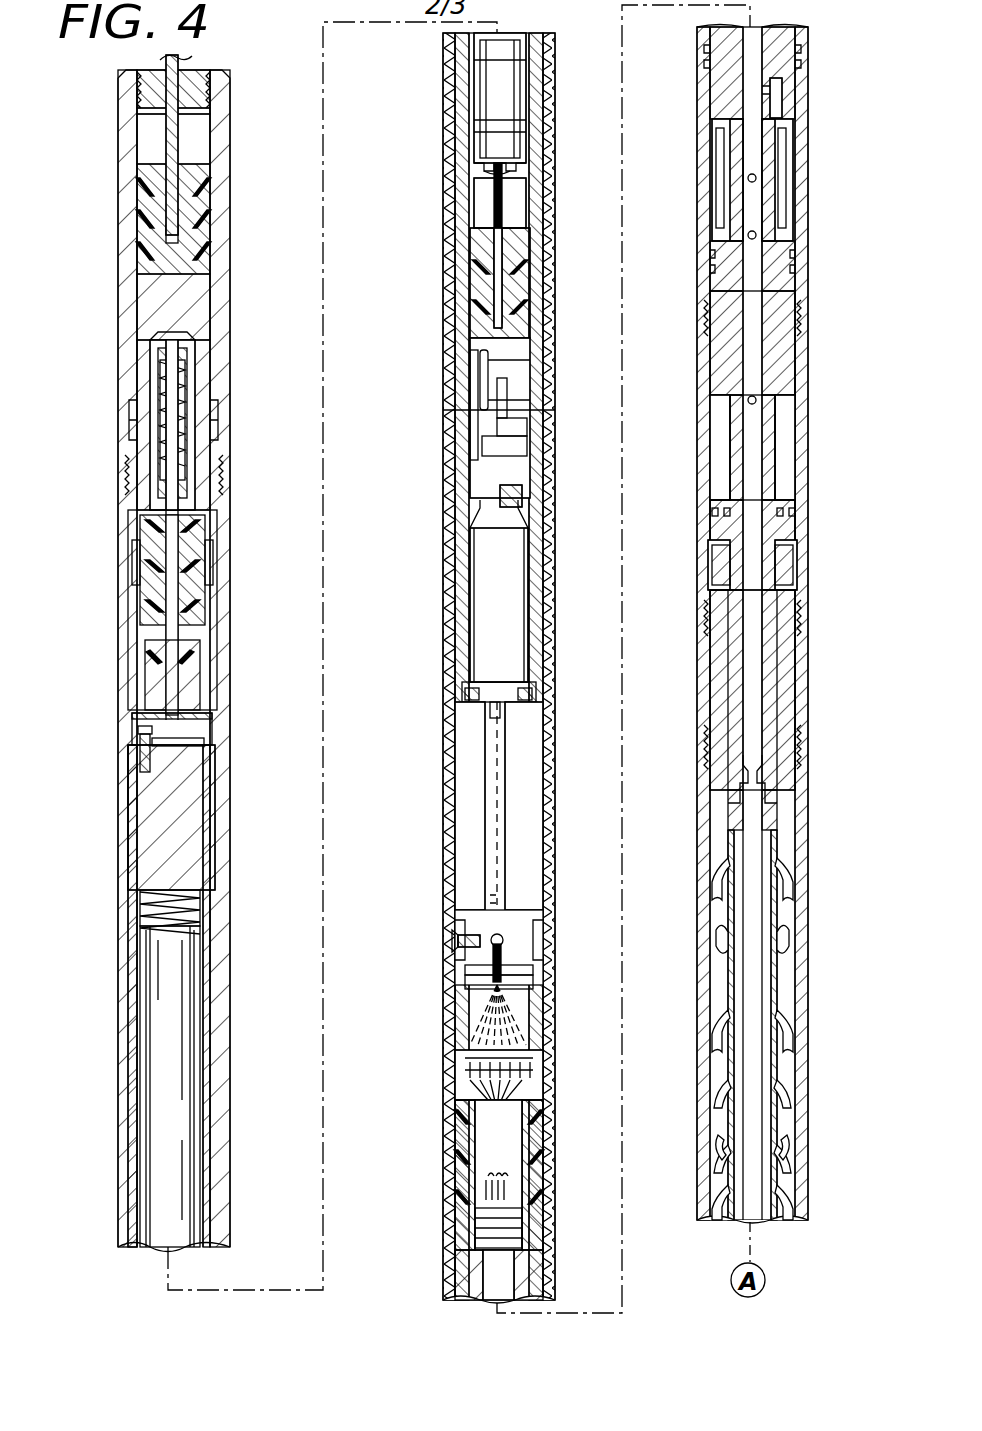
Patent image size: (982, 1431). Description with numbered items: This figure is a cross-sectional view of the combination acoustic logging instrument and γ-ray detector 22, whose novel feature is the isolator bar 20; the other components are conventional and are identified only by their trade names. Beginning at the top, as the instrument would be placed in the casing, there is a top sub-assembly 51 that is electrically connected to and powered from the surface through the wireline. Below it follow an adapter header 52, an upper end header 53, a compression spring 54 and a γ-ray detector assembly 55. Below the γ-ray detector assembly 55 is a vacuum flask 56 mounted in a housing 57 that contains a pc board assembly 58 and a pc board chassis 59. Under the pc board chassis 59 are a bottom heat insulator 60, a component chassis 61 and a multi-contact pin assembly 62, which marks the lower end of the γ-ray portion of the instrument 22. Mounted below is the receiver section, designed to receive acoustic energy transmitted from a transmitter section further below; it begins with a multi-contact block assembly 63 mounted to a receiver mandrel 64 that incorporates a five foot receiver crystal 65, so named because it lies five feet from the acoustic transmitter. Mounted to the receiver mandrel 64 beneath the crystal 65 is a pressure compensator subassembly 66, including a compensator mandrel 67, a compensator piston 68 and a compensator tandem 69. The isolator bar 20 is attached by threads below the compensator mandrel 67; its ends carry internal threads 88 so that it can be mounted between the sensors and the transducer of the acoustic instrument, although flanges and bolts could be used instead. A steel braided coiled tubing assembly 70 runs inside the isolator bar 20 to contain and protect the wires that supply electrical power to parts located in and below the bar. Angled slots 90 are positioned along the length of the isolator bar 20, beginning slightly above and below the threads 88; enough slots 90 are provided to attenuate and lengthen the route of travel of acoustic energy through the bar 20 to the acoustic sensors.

The combination acoustic logging instrument and γ-ray detector 22 is at (116, 246).
The top sub-assembly 51 is at (232, 134).
The adapter header 52 is at (212, 626).
The upper end header 53 is at (212, 722).
The compression spring 54 is at (200, 903).
The γ-ray detector assembly 55 is at (200, 1042).
The vacuum flask 56 is at (553, 394).
The housing 57 is at (555, 462).
The pc board assembly 58 is at (443, 410).
The pc board chassis 59 is at (476, 466).
The bottom heat insulator 60 is at (530, 550).
The component chassis 61 is at (505, 765).
The multi-contact pin assembly 62 is at (538, 1034).
The multi-contact block assembly 63 is at (538, 1152).
The receiver mandrel 64 is at (545, 1246).
The 5 foot receiver crystal 65 is at (790, 183).
The pressure compensator subassembly 66 is at (806, 398).
The compensator mandrel 67 is at (775, 450).
The compensator piston 68 is at (788, 526).
The compensator tandem 69 is at (808, 694).
The internal threads 88 is at (806, 754).
The isolator bar 20 is at (800, 954).
The steel braided coiled tubing assembly 70 is at (762, 1020).
The angled slots 90 is at (766, 1100).